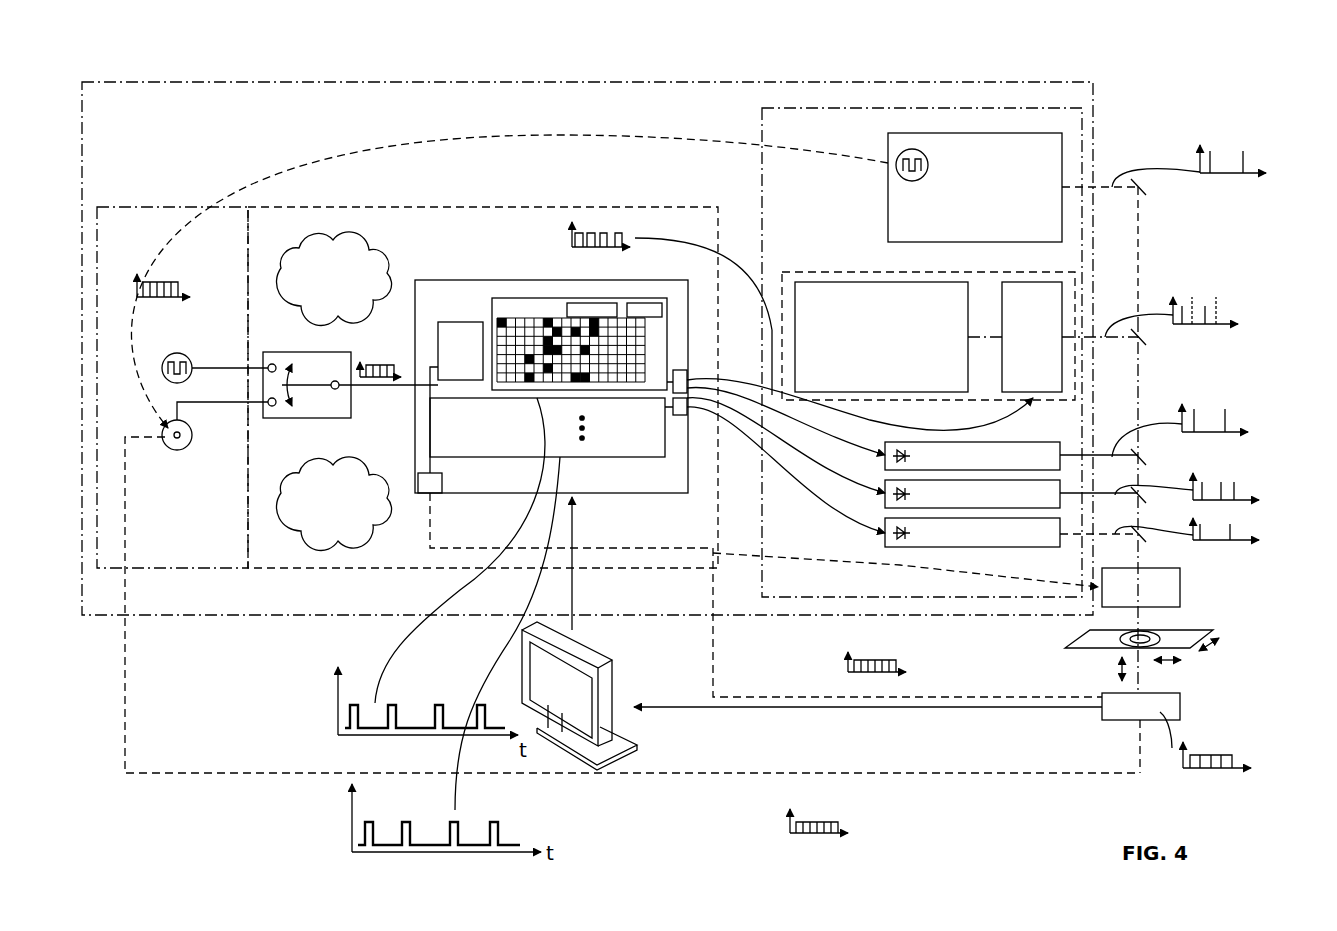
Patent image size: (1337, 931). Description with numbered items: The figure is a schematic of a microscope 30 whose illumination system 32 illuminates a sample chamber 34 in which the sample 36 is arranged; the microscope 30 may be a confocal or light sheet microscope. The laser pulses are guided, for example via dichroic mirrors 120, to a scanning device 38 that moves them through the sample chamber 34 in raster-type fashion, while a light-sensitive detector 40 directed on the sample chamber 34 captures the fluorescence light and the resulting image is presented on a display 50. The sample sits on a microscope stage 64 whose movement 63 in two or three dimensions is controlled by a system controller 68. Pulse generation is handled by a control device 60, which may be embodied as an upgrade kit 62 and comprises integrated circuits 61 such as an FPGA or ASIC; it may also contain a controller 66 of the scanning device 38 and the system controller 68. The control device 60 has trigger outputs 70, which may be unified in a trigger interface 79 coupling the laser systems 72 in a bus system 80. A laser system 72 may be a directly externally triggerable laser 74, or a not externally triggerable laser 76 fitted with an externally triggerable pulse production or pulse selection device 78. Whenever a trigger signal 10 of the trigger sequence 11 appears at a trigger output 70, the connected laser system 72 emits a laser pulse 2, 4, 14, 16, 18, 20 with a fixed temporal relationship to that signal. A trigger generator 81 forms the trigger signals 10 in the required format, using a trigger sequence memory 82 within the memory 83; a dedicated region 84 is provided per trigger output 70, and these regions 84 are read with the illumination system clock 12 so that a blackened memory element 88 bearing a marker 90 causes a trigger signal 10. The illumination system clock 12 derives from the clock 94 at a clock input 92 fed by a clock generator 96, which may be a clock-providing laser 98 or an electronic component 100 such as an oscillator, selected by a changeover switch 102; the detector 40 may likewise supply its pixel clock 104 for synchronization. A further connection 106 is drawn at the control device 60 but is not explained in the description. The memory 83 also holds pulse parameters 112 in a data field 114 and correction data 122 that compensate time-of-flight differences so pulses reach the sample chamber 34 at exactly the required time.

The laser pulse 2 is at (1243, 165).
The laser pulse 4 is at (1182, 305).
The trigger signal 10 is at (627, 238).
The trigger sequence 11 is at (607, 225).
The illumination system clock 12 is at (378, 355).
The laser pulse 14 is at (1192, 300).
The laser pulse 16 is at (1203, 490).
The laser pulse 18 is at (1194, 420).
The laser pulse 20 is at (1232, 535).
The microscope 30 is at (135, 68).
The illumination system 32 is at (540, 82).
The sample chamber 34 is at (1150, 633).
The sample 36 is at (1120, 648).
The scanning device 38 is at (946, 580).
The detector 40 is at (907, 706).
The display 50 is at (626, 668).
The control device 60 is at (372, 205).
The integrated circuit 61 is at (593, 207).
The upgrade kit 62 is at (170, 203).
The movement 63 is at (1117, 668).
The microscope stage 64 is at (1083, 640).
The controller 66 is at (333, 279).
The system controller 68 is at (333, 504).
The trigger output 70 is at (690, 372).
The laser system 72 is at (832, 272).
The externally triggerable laser 74 is at (1011, 494).
The not externally triggerable laser 76 is at (898, 337).
The pulse production/pulse selection device 78 is at (1070, 337).
The trigger interface 79 is at (680, 416).
The bus system 80 is at (727, 430).
The trigger generator 81 is at (460, 351).
The trigger sequence memory 82 is at (522, 312).
The memory 83 is at (553, 298).
The region 84 is at (648, 322).
The memory element 88 is at (503, 325).
The marker 90 is at (497, 330).
The clock input 92 is at (190, 447).
The clock 94 is at (183, 274).
The clock generator 96 is at (886, 153).
The clock-providing laser 98 is at (1013, 187).
The electronic component 100 is at (182, 355).
The changeover switch 102 is at (352, 412).
The pixel clock 104 is at (1215, 750).
The connector 106 is at (442, 483).
The pulse parameters 112 is at (523, 384).
The data field 114 is at (587, 305).
The dichroic mirror 120 is at (1145, 190).
The correction data 122 is at (643, 305).